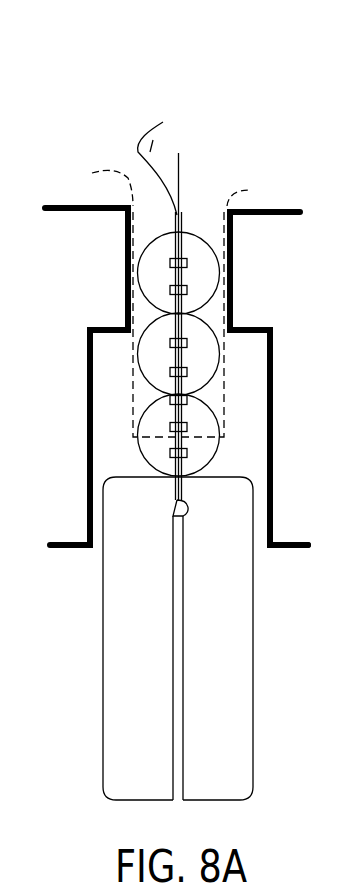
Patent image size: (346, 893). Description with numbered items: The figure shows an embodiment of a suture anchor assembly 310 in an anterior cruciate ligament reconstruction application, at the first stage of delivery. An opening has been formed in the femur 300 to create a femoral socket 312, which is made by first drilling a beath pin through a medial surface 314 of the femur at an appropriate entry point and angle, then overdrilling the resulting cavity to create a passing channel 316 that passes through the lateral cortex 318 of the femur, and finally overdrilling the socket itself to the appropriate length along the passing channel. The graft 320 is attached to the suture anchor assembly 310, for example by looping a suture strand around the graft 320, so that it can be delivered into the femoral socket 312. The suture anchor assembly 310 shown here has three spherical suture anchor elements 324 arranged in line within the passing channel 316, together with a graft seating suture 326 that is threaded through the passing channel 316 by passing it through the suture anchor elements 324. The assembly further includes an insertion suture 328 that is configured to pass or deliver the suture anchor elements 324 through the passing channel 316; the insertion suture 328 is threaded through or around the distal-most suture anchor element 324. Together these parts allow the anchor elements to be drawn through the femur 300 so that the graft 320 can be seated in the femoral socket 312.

The femur 300 is at (54, 602).
The suture anchor assembly 310 is at (210, 190).
The femoral socket 312 is at (273, 410).
The medial surface 314 is at (280, 549).
The passing channel 316 is at (127, 245).
The lateral cortex 318 is at (185, 517).
The graft 320 is at (240, 760).
The spherical suture anchor elements 324 is at (210, 275).
The graft seating suture 326 is at (162, 298).
The insertion suture 328 is at (126, 190).